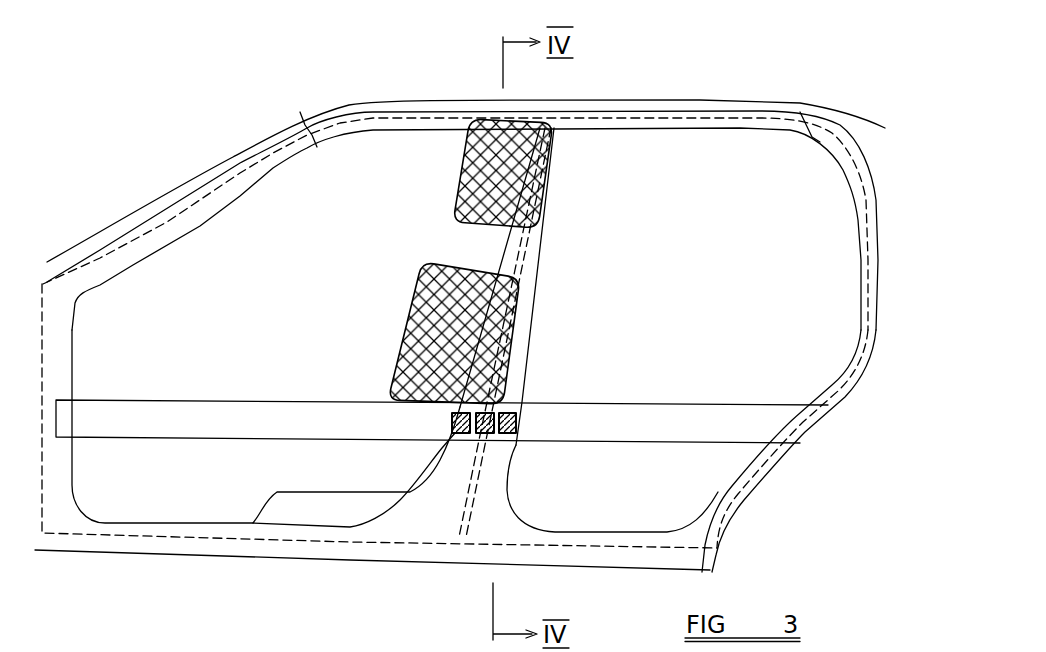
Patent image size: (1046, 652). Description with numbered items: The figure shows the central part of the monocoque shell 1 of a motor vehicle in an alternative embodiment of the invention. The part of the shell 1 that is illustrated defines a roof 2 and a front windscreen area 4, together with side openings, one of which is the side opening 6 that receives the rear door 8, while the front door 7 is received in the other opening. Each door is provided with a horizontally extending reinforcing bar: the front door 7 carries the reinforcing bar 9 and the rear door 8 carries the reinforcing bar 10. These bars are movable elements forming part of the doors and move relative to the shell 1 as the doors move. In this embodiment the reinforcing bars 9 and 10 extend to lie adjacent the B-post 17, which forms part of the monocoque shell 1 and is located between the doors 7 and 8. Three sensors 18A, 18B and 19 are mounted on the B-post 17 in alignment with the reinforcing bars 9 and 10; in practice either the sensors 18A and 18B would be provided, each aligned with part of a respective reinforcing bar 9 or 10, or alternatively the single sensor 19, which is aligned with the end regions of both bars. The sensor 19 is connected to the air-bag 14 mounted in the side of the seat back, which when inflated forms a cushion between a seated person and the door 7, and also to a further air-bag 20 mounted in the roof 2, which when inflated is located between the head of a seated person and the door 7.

The monocoque shell 1 is at (760, 86).
The roof 2 is at (672, 98).
The front windscreen area 4 is at (218, 148).
The side opening 6 is at (713, 473).
The door 7 is at (300, 112).
The door 8 is at (812, 137).
The reinforcing bar 9 is at (133, 425).
The reinforcing bar 10 is at (767, 422).
The air-bag 14 is at (483, 322).
The B-post 17 is at (546, 241).
The sensor 18A is at (458, 433).
The sensor 18B is at (507, 433).
The sensor 19 is at (482, 433).
The further air-bag 20 is at (480, 142).